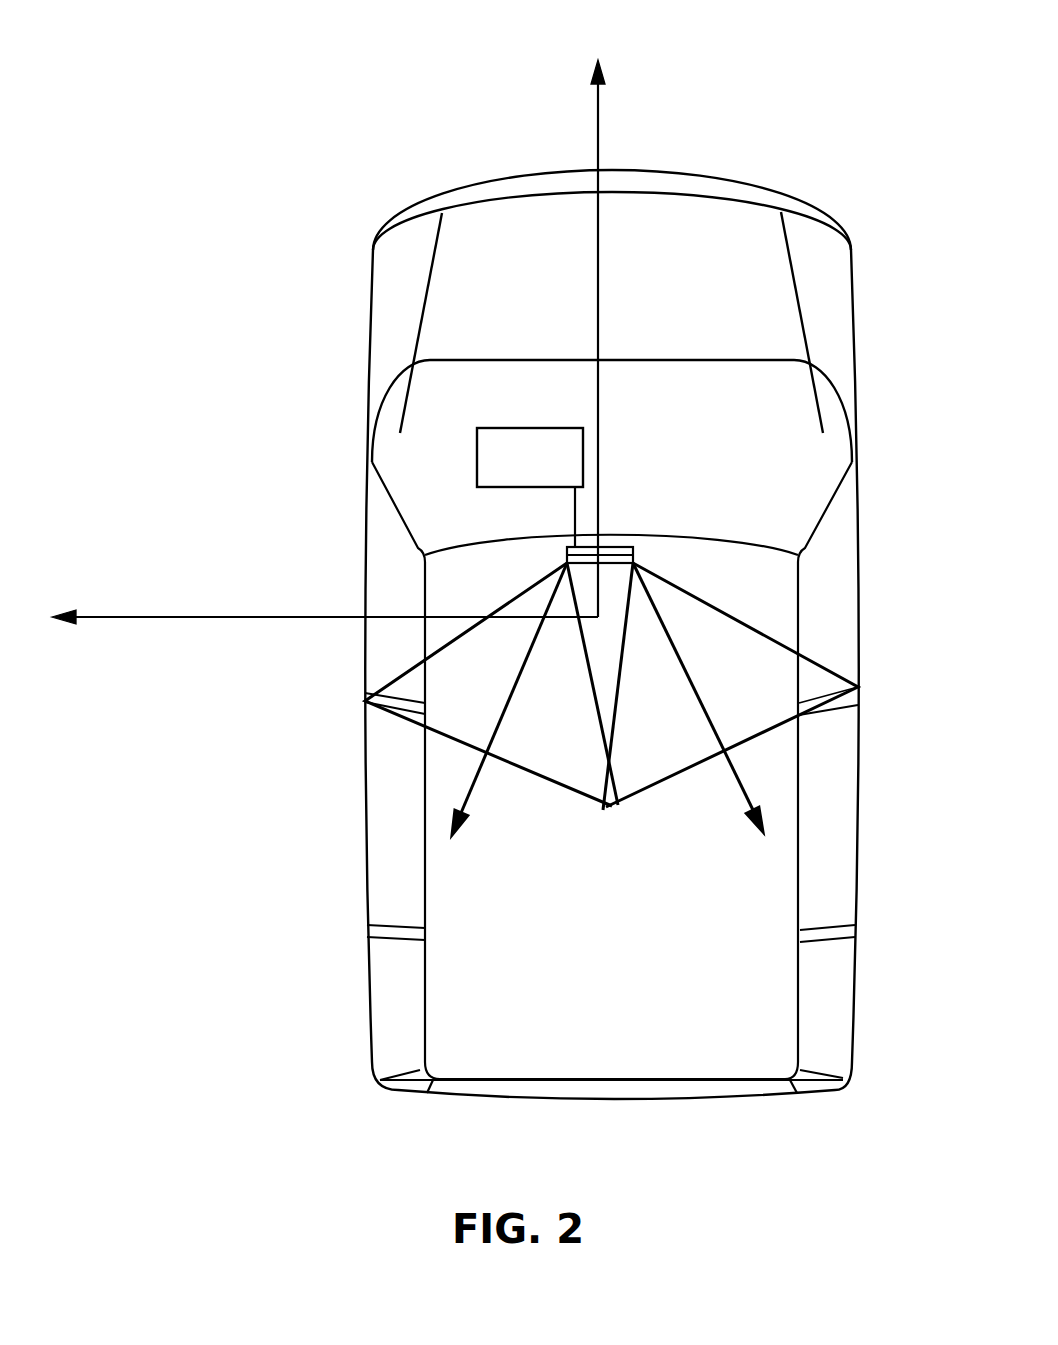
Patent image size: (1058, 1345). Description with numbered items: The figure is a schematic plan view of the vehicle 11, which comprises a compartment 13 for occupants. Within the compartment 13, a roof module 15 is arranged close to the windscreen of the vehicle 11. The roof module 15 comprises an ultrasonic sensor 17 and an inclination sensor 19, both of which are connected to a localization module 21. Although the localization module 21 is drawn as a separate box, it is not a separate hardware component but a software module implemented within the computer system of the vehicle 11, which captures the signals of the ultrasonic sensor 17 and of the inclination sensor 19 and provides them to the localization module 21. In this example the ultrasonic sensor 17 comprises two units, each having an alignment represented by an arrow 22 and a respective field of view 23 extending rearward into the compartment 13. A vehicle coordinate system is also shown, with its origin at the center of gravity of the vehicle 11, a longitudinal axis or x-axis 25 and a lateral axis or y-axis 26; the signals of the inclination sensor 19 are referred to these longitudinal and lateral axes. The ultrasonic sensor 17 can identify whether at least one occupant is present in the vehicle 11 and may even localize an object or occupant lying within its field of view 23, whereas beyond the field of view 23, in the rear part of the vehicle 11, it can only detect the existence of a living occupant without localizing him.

The vehicle 11 is at (820, 258).
The compartment 13 is at (717, 955).
The roof module 15 is at (633, 562).
The ultrasonic sensor 17 is at (567, 555).
The inclination sensor 19 is at (612, 547).
The localization module 21 is at (532, 428).
The arrow 22 is at (470, 785).
The field of view 23 is at (447, 692).
The x-axis 25 is at (598, 130).
The y-axis 26 is at (205, 620).